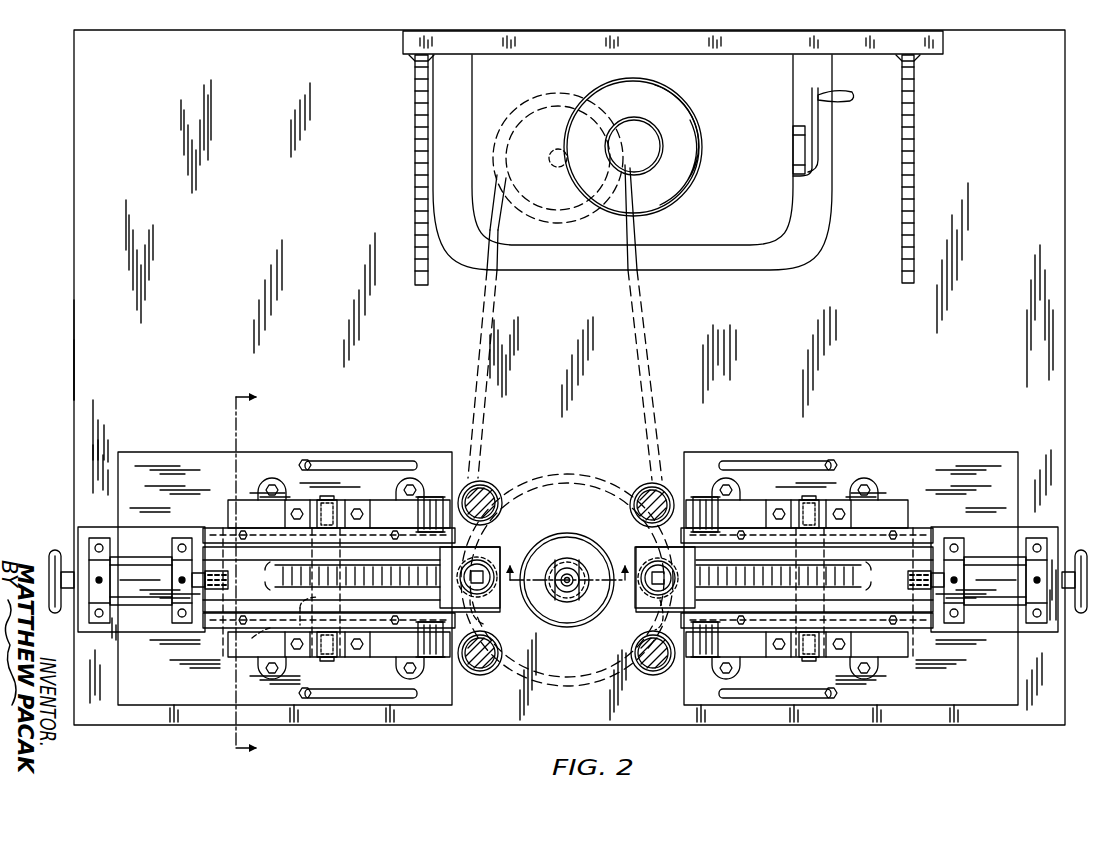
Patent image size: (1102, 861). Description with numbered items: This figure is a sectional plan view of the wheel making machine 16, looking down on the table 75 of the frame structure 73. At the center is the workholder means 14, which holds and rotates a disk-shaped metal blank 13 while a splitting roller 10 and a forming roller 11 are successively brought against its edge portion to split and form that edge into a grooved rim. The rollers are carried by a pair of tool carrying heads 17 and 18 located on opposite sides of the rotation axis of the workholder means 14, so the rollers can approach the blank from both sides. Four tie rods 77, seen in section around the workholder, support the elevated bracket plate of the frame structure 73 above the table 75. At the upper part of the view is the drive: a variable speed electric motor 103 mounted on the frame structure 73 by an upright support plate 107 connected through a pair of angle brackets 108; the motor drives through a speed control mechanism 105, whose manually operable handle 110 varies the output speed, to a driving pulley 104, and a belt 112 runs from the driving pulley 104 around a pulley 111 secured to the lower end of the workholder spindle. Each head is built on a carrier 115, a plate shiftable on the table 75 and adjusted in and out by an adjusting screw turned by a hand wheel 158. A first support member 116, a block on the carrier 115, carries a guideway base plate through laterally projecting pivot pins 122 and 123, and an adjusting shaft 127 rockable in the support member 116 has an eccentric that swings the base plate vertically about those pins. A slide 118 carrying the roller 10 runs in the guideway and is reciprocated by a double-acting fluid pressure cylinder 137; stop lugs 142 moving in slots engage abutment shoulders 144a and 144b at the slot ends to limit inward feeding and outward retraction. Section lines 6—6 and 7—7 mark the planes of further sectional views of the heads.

The wheel making machine 16 is at (72, 246).
The frame structure 73 is at (72, 348).
The table 75 is at (86, 376).
The variable speed electric motor 103 is at (636, 85).
The driving pulley 104 is at (548, 224).
The speed control mechanism 105 is at (738, 244).
The upright support plate 107 is at (930, 46).
The angle brackets 108 is at (914, 132).
The control handle 110 is at (836, 100).
The belt 112 is at (647, 398).
The tie rods 77 is at (486, 482).
The workholder means 14 is at (556, 538).
The disk-shaped metal blank 13 is at (574, 558).
The tool carrying head 17 is at (482, 556).
The tool carrying head 18 is at (650, 556).
The splitting roller 10 is at (490, 604).
The forming roller 11 is at (650, 605).
The pulley 111 is at (550, 664).
The carrier 115 is at (180, 436).
The first support member 116 is at (242, 498).
The slide 118 is at (210, 526).
The pivot pin 122 is at (432, 658).
The pivot pin 123 is at (430, 496).
The adjusting shaft 127 is at (327, 498).
The fluid pressure cylinder 137 is at (150, 568).
The stop lugs 142 is at (275, 612).
The abutment shoulder 144a is at (320, 598).
The abutment shoulder 144b is at (252, 638).
The hand wheel 158 is at (58, 548).
The section line 6- 6 is at (255, 575).
The section line 7- 7 is at (567, 559).